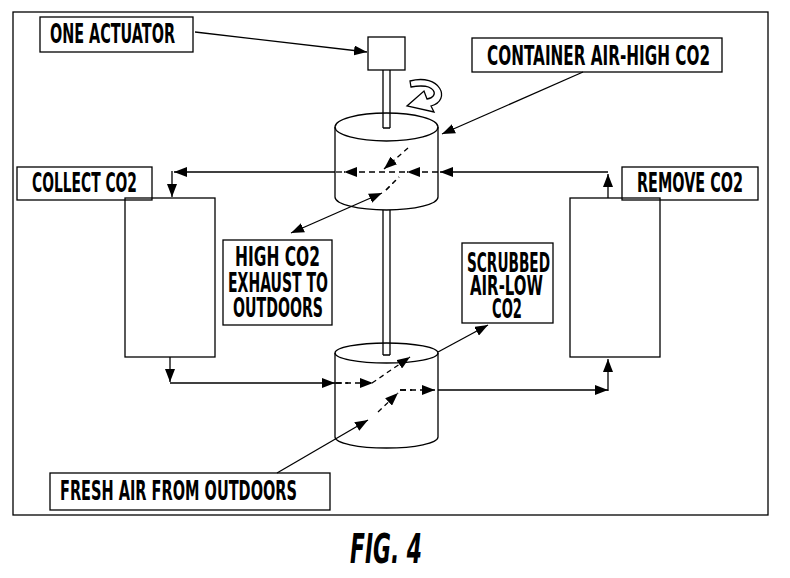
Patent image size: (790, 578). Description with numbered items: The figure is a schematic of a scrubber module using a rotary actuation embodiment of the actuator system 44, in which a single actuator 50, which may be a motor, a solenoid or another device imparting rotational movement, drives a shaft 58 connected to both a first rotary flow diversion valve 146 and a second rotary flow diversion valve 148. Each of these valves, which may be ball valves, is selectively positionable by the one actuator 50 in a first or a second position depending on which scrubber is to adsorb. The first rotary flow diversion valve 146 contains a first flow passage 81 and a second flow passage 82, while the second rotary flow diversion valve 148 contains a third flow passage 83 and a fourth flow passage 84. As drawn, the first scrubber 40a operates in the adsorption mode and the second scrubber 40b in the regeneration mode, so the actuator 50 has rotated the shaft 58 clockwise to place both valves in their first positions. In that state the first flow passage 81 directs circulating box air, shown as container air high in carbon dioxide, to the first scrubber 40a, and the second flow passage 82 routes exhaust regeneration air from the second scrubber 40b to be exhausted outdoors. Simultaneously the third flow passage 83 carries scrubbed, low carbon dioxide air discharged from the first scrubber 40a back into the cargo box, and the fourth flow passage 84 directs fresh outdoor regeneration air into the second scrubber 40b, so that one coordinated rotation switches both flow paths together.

The actuator system 44 is at (284, 121).
The actuator 50 is at (405, 58).
The shaft 58 is at (383, 91).
The first flow passage 81 is at (358, 168).
The second flow passage 82 is at (400, 182).
The third flow passage 83 is at (347, 386).
The fourth flow passage 84 is at (410, 388).
The first rotary flow diversion valve 146 is at (440, 152).
The second rotary flow diversion valve 148 is at (438, 410).
The first scrubber 40a is at (125, 298).
The second scrubber 40b is at (661, 297).